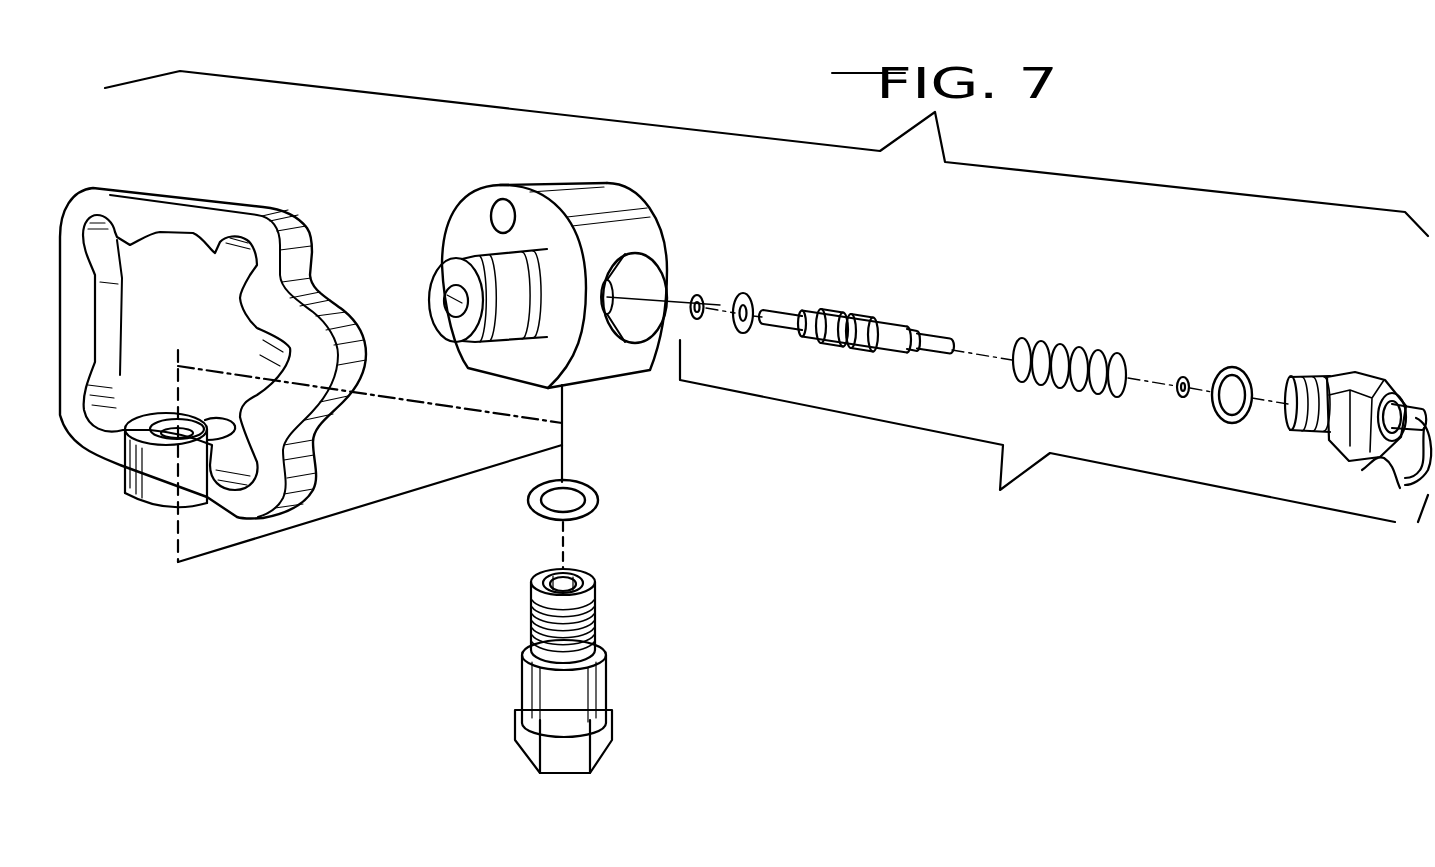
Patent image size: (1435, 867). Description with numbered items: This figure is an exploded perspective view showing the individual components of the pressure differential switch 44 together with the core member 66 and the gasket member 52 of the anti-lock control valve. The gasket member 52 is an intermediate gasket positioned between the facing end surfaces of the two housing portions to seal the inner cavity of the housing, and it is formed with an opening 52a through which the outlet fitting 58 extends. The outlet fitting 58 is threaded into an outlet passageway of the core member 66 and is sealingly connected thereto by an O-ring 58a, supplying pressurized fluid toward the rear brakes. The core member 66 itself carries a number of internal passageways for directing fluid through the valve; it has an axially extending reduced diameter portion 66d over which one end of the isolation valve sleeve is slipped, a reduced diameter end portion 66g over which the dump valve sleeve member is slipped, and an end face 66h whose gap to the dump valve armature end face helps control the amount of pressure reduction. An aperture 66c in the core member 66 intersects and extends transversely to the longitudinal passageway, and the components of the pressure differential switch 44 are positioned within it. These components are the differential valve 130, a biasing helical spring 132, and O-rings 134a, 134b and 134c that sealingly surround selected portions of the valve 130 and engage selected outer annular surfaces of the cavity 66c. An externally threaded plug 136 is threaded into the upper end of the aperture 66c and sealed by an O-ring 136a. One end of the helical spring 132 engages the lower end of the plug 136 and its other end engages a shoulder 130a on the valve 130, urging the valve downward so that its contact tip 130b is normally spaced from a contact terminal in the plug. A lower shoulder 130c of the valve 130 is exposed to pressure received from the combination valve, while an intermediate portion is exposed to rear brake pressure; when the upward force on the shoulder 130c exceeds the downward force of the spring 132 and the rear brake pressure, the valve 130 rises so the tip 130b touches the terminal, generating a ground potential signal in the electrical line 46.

The pressure differential switch 44 is at (978, 540).
The electrical line 46 is at (1405, 468).
The gasket member 52 is at (266, 198).
The opening 52a is at (162, 440).
The outlet fitting 58 is at (607, 680).
The O-ring 58a is at (599, 497).
The core member 66 is at (652, 224).
The aperture 66c is at (642, 282).
The reduced diameter portion 66d is at (667, 262).
The reduced diameter end portion 66g is at (487, 254).
The end face 66h is at (442, 288).
The differential valve 130 is at (879, 336).
The shoulder 130a is at (876, 351).
The contact tip 130b is at (942, 356).
The lower shoulder 130c is at (830, 290).
The biasing helical spring 132 is at (1092, 350).
The O-ring 134a is at (702, 298).
The O-ring 134b is at (755, 303).
The O-ring 134c is at (1185, 376).
The externally threaded plug 136 is at (1360, 383).
The O-ring 136a is at (1243, 368).